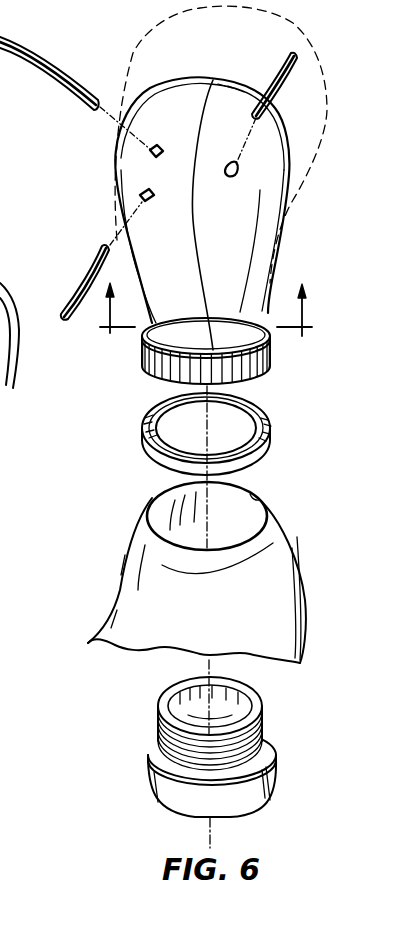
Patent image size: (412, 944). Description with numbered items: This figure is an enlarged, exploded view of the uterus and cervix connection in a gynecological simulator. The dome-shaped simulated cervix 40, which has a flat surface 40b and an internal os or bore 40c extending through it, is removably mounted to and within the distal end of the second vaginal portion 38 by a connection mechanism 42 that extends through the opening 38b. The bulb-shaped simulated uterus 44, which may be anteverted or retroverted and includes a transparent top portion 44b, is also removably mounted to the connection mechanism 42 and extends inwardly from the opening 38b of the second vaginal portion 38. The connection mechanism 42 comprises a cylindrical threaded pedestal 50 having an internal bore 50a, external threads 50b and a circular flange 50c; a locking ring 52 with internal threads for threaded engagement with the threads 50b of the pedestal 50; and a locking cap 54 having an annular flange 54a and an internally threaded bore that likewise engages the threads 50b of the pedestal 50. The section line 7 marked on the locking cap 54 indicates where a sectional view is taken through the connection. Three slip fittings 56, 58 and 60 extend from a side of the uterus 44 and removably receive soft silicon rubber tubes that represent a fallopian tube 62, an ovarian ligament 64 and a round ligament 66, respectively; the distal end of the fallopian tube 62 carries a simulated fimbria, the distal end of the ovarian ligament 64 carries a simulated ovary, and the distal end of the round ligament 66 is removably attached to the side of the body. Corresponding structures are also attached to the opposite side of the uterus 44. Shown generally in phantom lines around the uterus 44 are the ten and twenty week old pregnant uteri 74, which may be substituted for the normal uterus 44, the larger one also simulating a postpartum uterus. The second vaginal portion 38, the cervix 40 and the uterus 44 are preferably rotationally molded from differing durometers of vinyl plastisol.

The section line 7- 7 is at (205, 321).
The second vaginal portion 38 is at (288, 605).
The opening 38b is at (263, 503).
The simulated cervix 40 is at (218, 751).
The flat surface 40b is at (167, 781).
The internal os (bore) 40c is at (247, 707).
The connection mechanism 42 is at (124, 446).
The simulated uterus 44 is at (282, 228).
The transparent top portion 44b is at (128, 163).
The cylindrical threaded pedestal 50 is at (217, 728).
The internal bore 50a is at (190, 681).
The external threads 50b is at (160, 729).
The circular flange 50c is at (155, 743).
The locking ring 52 is at (267, 430).
The locking cap 54 is at (267, 360).
The annular flange 54a is at (391, 494).
The slip fitting 56 is at (157, 148).
The slip fitting 58 is at (243, 172).
The slip fitting 60 is at (152, 205).
The fallopian tube 62 is at (60, 64).
The ovarian ligament 64 is at (272, 74).
The round ligament 66 is at (82, 275).
The pregnant uteri 74 is at (325, 67).